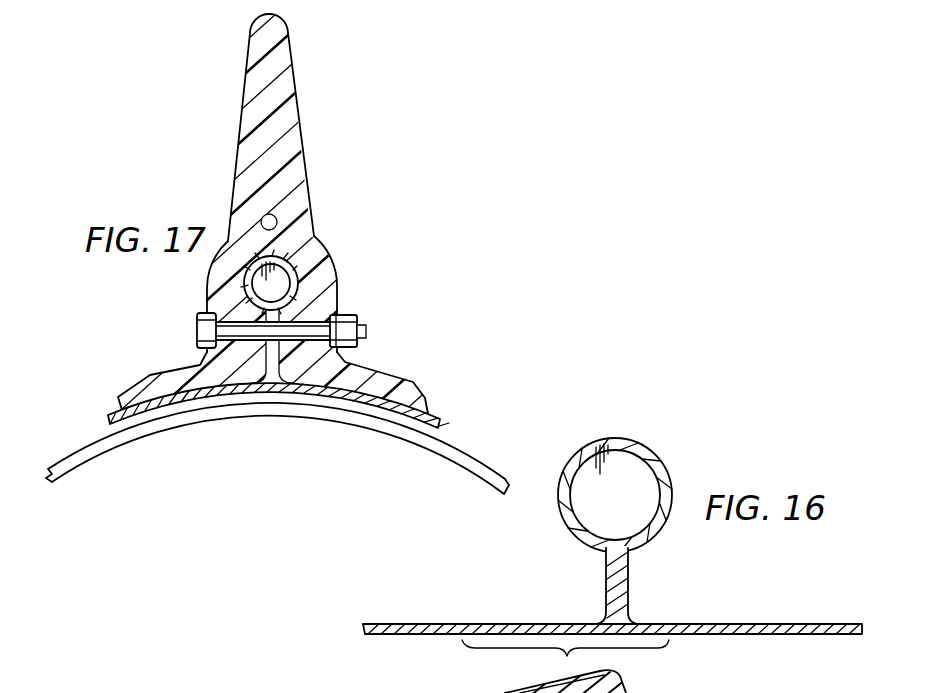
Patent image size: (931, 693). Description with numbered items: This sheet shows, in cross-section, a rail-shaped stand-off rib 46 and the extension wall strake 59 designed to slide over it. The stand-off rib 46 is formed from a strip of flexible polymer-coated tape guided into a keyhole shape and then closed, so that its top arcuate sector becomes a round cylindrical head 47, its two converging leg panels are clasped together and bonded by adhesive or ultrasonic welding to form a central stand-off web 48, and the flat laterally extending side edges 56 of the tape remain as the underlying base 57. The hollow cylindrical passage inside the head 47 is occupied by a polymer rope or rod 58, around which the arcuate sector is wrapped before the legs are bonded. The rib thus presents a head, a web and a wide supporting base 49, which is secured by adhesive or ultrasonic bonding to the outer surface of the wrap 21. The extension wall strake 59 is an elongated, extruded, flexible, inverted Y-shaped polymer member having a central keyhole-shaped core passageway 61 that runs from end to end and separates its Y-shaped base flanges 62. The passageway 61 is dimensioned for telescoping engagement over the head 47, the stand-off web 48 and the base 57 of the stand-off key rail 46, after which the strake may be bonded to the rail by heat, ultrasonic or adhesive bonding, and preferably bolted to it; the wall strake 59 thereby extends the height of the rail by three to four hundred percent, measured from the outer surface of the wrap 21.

In FIG. 17, the extension wall strake 59 is at (345, 235).
In FIG. 17, the keyhole-shaped core passageway 61 is at (297, 278).
In FIG. 17, the Y-shaped base flanges 62 is at (176, 372).
In FIG. 17, the wrap 21 is at (473, 458).
In FIG. 16, the round cylindrical head 47 is at (648, 447).
In FIG. 16, the stand-off rib 46 is at (642, 501).
In FIG. 16, the polymer rod 58 is at (641, 516).
In FIG. 16, the stand-off web 48 is at (632, 568).
In FIG. 16, the side edges 56 is at (447, 623).
In FIG. 16, the base 57 is at (676, 624).
In FIG. 16, the wide supporting base 49 is at (567, 656).